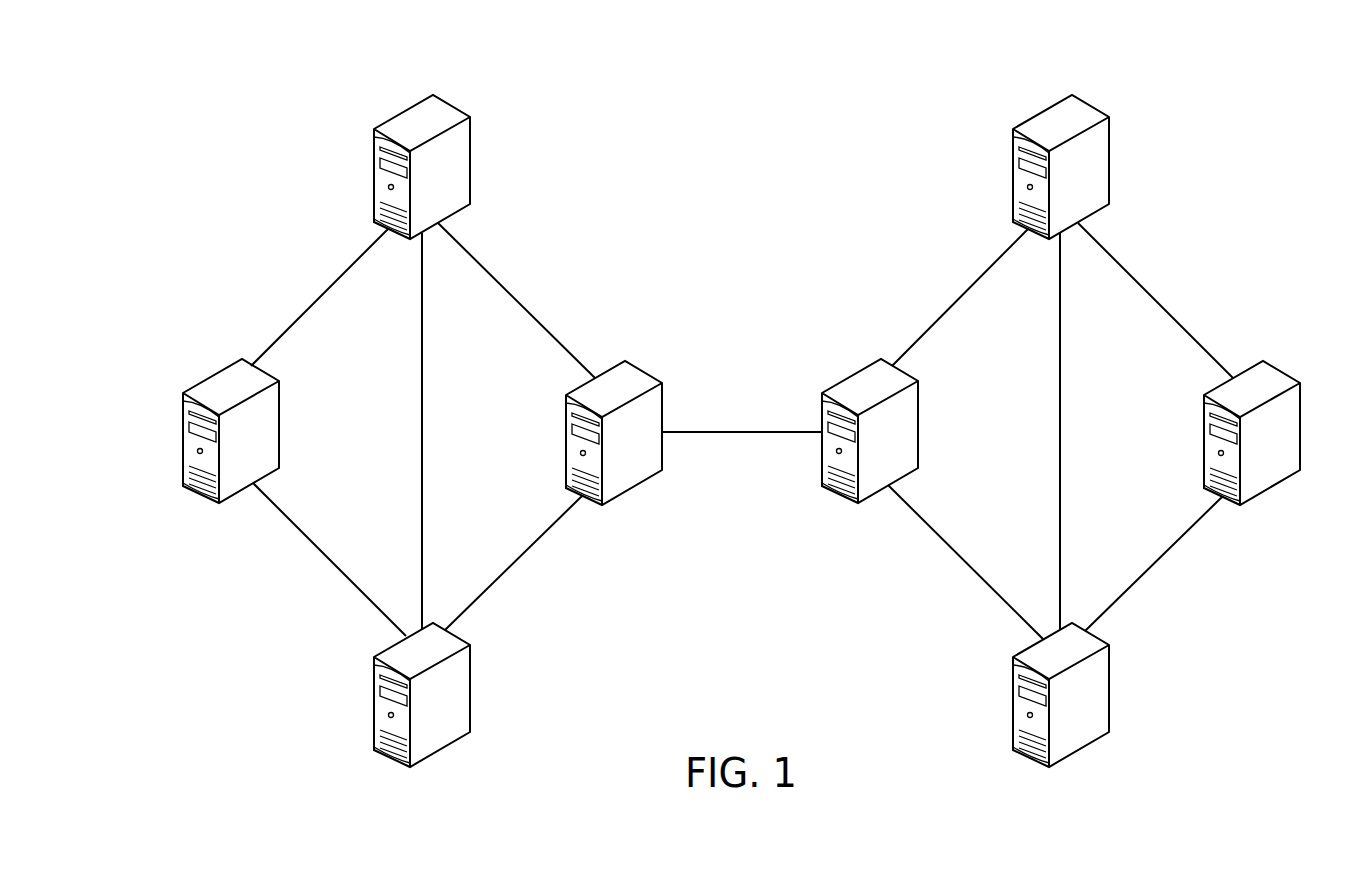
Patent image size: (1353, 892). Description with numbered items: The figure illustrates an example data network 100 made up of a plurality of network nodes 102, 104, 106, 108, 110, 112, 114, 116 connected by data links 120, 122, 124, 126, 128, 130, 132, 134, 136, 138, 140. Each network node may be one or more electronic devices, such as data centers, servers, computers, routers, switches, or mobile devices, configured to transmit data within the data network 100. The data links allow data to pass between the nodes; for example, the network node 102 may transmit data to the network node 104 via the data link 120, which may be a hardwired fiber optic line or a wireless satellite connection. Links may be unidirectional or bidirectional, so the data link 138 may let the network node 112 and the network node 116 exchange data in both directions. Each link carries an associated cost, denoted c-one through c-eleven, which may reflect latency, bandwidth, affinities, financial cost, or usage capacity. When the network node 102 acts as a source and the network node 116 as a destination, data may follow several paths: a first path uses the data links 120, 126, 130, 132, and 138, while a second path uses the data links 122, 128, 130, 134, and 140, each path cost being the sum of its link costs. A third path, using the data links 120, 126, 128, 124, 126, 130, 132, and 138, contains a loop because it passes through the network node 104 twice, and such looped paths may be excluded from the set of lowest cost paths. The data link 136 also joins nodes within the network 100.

The data network 100 is at (236, 143).
The network node 102 is at (247, 375).
The network node 104 is at (437, 112).
The network node 106 is at (453, 727).
The network node 108 is at (630, 375).
The network node 110 is at (886, 375).
The network node 112 is at (1075, 112).
The network node 114 is at (1092, 726).
The network node 116 is at (1267, 376).
The data link 120 is at (303, 318).
The data link 122 is at (296, 526).
The data link 124 is at (422, 386).
The data link 126 is at (562, 344).
The data link 128 is at (537, 540).
The data link 130 is at (758, 433).
The data link 132 is at (941, 317).
The data link 134 is at (930, 527).
The data link 136 is at (1060, 386).
The data link 138 is at (1198, 342).
The data link 140 is at (1176, 542).